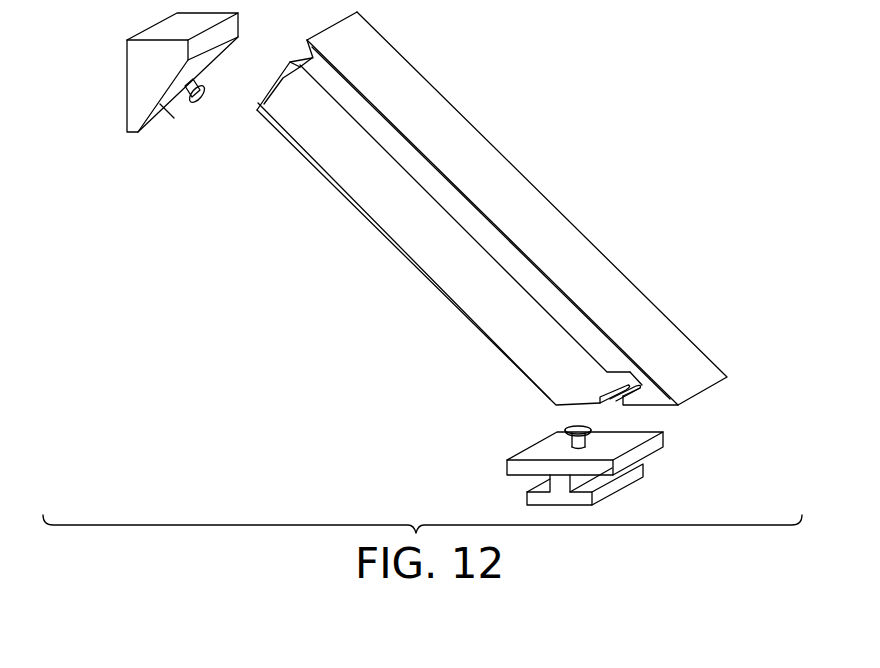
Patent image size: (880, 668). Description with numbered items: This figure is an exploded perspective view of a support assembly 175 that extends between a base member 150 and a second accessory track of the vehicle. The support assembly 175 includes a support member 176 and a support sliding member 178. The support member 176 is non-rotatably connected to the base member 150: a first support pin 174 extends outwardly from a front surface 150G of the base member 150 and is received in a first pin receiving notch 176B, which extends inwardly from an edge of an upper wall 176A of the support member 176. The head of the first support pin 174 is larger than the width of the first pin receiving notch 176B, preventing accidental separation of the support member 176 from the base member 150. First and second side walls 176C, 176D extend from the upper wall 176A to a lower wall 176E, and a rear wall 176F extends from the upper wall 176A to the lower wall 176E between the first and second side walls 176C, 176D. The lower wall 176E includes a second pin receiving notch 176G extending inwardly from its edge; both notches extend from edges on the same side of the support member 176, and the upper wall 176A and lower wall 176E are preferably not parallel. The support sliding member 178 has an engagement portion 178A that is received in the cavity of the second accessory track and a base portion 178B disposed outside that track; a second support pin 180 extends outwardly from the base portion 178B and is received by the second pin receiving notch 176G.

The base member 150 is at (127, 62).
The first support pin 174 is at (202, 102).
The front surface 150G is at (165, 107).
The support assembly 175 is at (326, 392).
The support member 176 is at (597, 245).
The upper wall 176A is at (302, 78).
The first pin receiving notch 176B is at (288, 72).
The first side wall 176C is at (437, 243).
The second side wall 176D is at (508, 188).
The lower wall 176E is at (602, 390).
The rear wall 176F is at (403, 157).
The second pin receiving notch 176G is at (612, 378).
The support sliding member 178 is at (663, 438).
The engagement portion 178A is at (623, 490).
The base portion 178B is at (535, 453).
The second support pin 180 is at (565, 440).